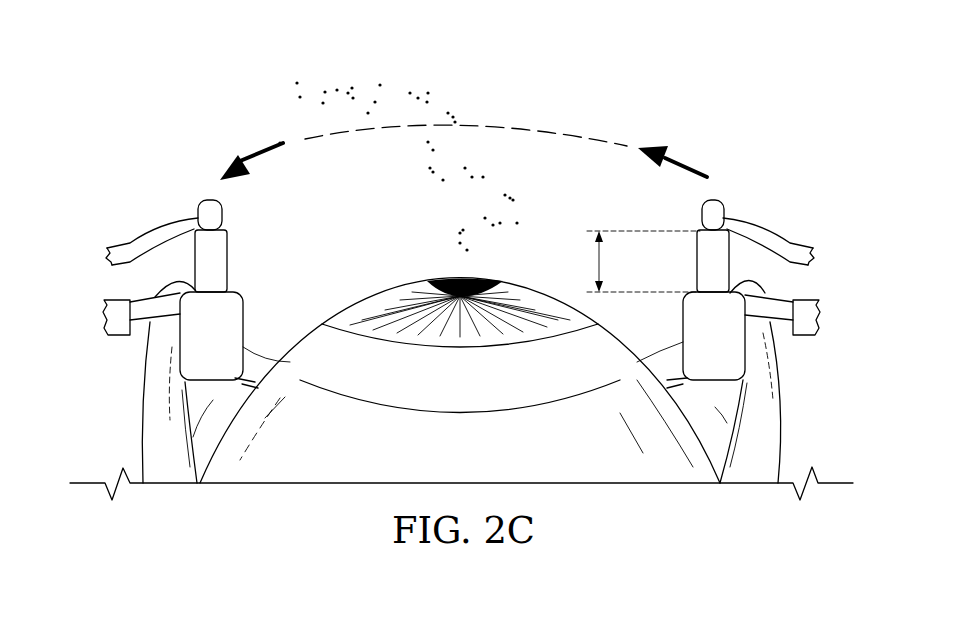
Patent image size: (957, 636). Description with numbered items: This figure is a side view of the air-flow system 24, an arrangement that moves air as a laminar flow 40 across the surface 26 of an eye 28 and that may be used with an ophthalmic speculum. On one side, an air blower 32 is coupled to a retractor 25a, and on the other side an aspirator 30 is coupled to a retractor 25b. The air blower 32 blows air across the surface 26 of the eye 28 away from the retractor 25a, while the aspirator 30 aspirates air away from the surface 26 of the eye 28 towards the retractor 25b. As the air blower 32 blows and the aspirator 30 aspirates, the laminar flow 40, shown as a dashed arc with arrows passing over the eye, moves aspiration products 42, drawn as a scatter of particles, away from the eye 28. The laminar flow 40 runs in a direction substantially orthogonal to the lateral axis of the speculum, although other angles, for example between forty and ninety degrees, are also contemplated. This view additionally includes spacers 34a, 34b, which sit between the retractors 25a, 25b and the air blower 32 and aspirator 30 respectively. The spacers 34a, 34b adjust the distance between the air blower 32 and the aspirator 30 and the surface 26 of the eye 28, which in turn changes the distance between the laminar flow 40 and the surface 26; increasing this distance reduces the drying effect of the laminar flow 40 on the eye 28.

The air-flow system 24 is at (795, 198).
The retractor 25a is at (682, 328).
The retractor 25b is at (243, 313).
The surface 26 is at (545, 293).
The eye 28 is at (369, 264).
The aspirator 30 is at (212, 198).
The air blower 32 is at (712, 198).
The spacer 34a is at (697, 270).
The spacer 34b is at (232, 262).
The laminar flow 40 is at (683, 147).
The aspiration products 42 is at (362, 81).